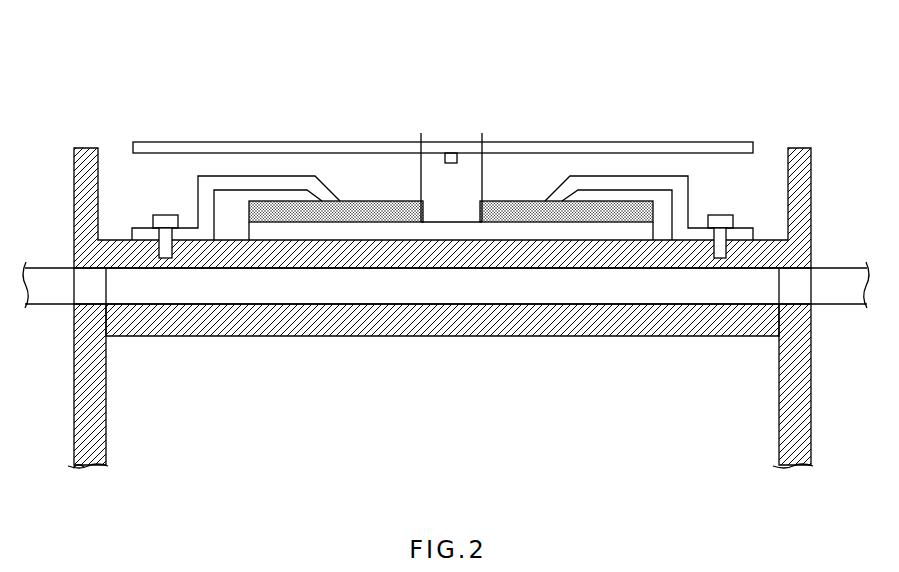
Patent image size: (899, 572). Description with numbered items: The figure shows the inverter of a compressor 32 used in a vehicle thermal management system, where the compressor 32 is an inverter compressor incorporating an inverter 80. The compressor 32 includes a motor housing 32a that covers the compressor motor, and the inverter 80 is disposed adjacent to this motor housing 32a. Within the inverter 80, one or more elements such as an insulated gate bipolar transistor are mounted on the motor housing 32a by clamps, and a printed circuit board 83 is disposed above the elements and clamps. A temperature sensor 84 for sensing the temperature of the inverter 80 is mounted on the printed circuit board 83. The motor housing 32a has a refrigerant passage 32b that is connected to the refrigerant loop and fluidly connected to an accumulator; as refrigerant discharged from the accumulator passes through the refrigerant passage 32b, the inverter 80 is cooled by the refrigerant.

The compressor 32 is at (436, 308).
The motor housing 32a is at (90, 432).
The refrigerant passage 32b is at (442, 283).
The inverter 80 is at (441, 140).
The printed circuit board 83 is at (262, 140).
The temperature sensor 84 is at (458, 158).